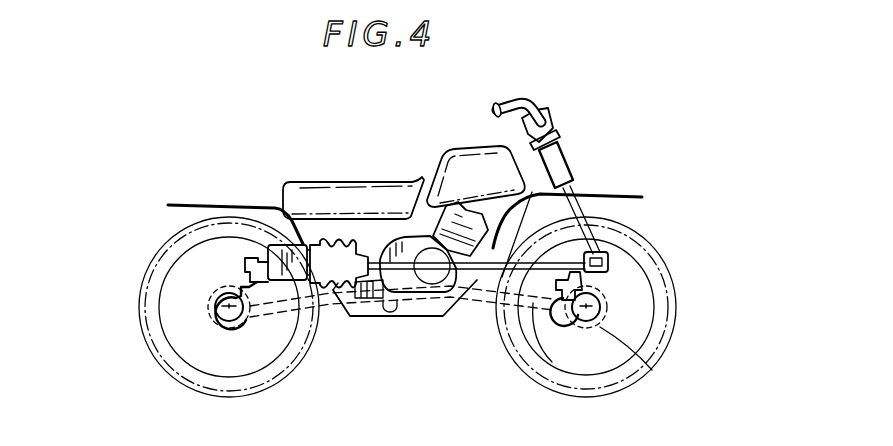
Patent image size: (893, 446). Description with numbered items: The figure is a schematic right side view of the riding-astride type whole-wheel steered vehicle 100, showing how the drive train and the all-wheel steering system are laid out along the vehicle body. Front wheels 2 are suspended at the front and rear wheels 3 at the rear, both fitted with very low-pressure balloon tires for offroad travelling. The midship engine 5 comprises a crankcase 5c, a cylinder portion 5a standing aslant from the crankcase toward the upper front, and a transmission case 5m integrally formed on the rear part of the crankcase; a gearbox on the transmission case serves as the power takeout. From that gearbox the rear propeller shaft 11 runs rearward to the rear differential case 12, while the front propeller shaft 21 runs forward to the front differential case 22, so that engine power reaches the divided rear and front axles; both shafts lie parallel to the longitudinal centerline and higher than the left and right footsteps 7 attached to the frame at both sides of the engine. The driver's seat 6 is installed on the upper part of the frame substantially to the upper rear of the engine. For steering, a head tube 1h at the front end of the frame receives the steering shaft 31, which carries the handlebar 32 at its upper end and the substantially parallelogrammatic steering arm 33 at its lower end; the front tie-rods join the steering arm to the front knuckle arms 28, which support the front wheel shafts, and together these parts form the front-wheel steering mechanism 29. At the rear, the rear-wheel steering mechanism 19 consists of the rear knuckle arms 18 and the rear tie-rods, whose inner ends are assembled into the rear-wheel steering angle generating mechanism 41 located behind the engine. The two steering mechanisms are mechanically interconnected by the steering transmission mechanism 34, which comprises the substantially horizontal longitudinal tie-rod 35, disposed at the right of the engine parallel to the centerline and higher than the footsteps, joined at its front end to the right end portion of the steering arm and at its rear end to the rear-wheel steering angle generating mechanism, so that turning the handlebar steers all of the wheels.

The riding-astride type whole-wheel steered vehicle 100 is at (669, 110).
The head tube 1h is at (568, 166).
The front wheels 2 is at (652, 344).
The rear wheels 3 is at (163, 284).
The engine 5 is at (437, 305).
The cylinder portion 5a is at (466, 230).
The crankcase 5c is at (453, 305).
The transmission case 5m is at (408, 303).
The driver's seat 6 is at (343, 193).
The footsteps 7 is at (389, 313).
The rear propeller shaft 11 is at (316, 294).
The rear differential case 12 is at (208, 319).
The knuckle arms 18 is at (233, 283).
The rear-wheel steering mechanism 19 is at (254, 231).
The front propeller shaft 21 is at (538, 355).
The front differential case 22 is at (646, 370).
The knuckle arms 28 is at (607, 300).
The front-wheel steering mechanism 29 is at (641, 217).
The steering shaft 31 is at (572, 186).
The handlebar 32 is at (549, 110).
The steering arm 33 is at (602, 262).
The steering transmission mechanism 34 is at (395, 255).
The longitudinal tie-rod 35 is at (562, 145).
The rear-wheel steering angle generating mechanism 41 is at (318, 236).